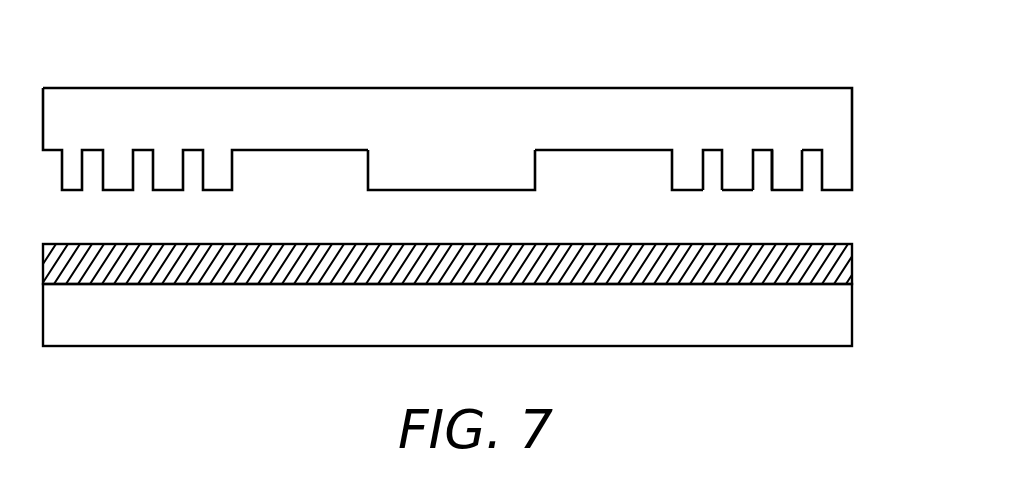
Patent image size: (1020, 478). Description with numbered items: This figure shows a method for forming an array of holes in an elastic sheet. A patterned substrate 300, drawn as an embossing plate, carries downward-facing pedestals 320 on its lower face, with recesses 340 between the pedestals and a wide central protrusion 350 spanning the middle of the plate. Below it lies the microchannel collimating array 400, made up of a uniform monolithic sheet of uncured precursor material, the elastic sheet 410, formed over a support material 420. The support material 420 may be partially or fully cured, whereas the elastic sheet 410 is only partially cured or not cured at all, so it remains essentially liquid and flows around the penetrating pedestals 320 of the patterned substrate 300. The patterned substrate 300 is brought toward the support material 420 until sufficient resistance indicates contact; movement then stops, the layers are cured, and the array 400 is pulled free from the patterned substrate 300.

The patterned substrate 300 is at (575, 77).
The pedestals 320 is at (785, 162).
The recess 340 is at (762, 147).
The wide protrusion 350 is at (437, 168).
The microchannel collimating array 400 is at (463, 301).
The elastic sheet 410 is at (798, 242).
The support material 420 is at (810, 323).